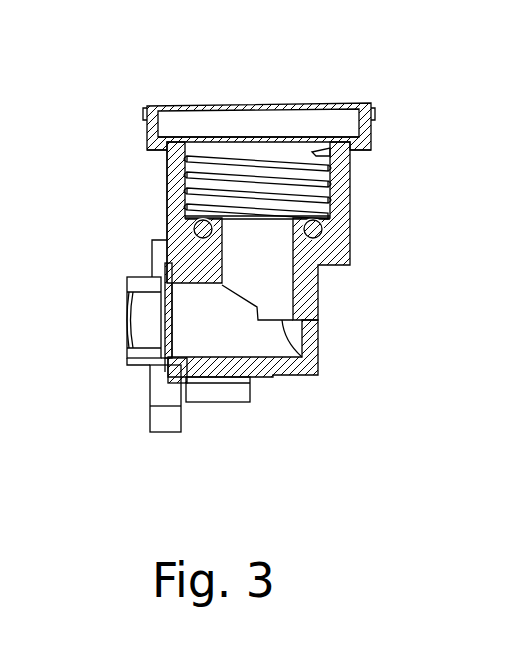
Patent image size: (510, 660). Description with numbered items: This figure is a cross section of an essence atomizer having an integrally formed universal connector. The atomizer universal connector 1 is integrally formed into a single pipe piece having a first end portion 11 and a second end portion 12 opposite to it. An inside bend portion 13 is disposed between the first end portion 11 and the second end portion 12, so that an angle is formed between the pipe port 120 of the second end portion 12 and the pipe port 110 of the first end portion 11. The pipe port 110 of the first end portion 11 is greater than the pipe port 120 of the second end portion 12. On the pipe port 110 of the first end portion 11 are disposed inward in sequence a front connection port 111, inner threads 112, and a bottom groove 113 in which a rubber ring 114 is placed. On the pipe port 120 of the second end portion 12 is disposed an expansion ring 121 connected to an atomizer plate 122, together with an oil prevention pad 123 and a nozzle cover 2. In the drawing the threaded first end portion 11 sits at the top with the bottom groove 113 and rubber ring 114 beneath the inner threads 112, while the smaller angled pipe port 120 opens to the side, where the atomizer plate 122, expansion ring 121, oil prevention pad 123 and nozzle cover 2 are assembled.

The atomizer universal connector 1 is at (368, 142).
The first end portion 11 is at (350, 192).
The pipe port 110 is at (182, 104).
The front connection port 111 is at (312, 122).
The inner threads 112 is at (262, 178).
The bottom groove 113 is at (173, 226).
The rubber ring 114 is at (168, 201).
The second end portion 12 is at (272, 377).
The pipe port 120 is at (198, 298).
The expansion ring 121 is at (183, 382).
The atomizer plate 122 is at (170, 325).
The oil prevention pad 123 is at (165, 368).
The inside bend portion 13 is at (278, 335).
The nozzle cover 2 is at (160, 390).